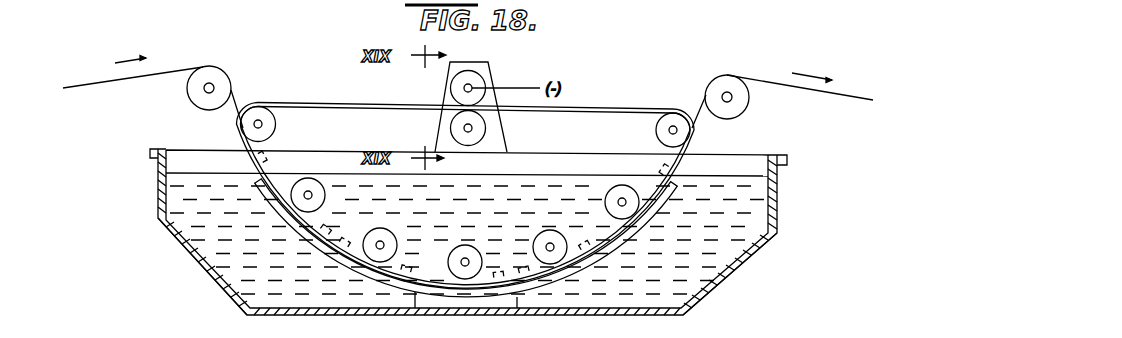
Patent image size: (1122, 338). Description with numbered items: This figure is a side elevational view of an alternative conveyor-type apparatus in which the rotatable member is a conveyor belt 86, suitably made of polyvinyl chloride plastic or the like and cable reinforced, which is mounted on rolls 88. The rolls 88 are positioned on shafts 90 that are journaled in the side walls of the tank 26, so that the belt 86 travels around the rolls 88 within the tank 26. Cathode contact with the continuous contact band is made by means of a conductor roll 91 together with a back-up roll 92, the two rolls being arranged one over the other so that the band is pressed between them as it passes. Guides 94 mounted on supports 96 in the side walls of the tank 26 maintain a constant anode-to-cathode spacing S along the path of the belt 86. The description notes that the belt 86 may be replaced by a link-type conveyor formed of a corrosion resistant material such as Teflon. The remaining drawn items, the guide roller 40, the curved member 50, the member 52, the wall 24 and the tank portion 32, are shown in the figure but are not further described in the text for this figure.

The guide roller 40 is at (209, 66).
The conveyor belt 86 is at (604, 107).
The rolls 88 is at (308, 178).
The shafts 90 is at (464, 88).
The conductor roll 91 is at (481, 76).
The back-up roll 92 is at (486, 128).
The guides 94 is at (250, 166).
The supports 96 is at (263, 156).
The curved shield 50 is at (628, 243).
The shield support 52 is at (518, 300).
The tank wall 24 is at (181, 246).
The tank 26 is at (723, 283).
The tank 32 is at (758, 200).
The anode-to-cathode spacing S is at (350, 267).